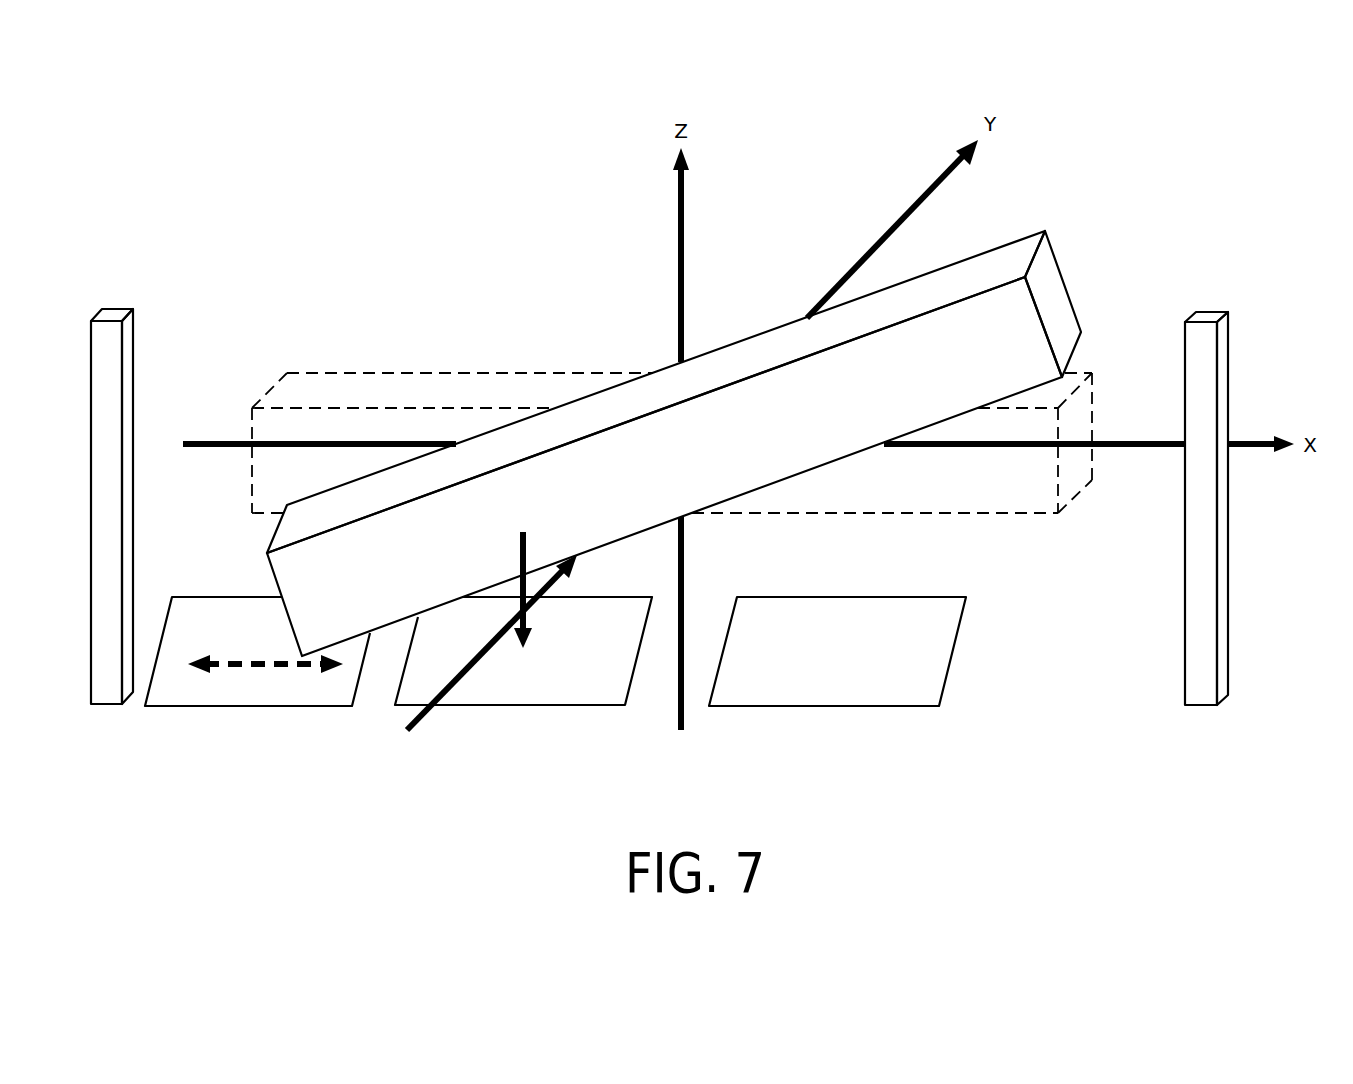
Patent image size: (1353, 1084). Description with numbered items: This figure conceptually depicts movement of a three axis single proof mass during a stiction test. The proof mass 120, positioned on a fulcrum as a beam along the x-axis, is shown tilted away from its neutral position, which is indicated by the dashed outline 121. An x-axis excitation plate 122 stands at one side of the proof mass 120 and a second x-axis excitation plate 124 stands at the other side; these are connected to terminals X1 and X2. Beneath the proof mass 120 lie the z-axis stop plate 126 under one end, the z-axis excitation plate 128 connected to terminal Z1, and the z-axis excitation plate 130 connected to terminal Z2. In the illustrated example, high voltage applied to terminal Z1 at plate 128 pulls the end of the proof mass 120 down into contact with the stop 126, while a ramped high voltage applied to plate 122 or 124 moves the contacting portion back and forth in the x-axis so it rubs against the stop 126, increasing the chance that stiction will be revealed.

The proof mass 120 is at (1066, 278).
The reference outline of bar 121 is at (1095, 402).
The x-axis excitation plate 122 is at (116, 309).
The second x-axis excitation plate 124 is at (1208, 311).
The z-axis stop plate 126 is at (275, 707).
The z-axis excitation plate 128 is at (548, 705).
The z-axis excitation plate 130 is at (862, 707).